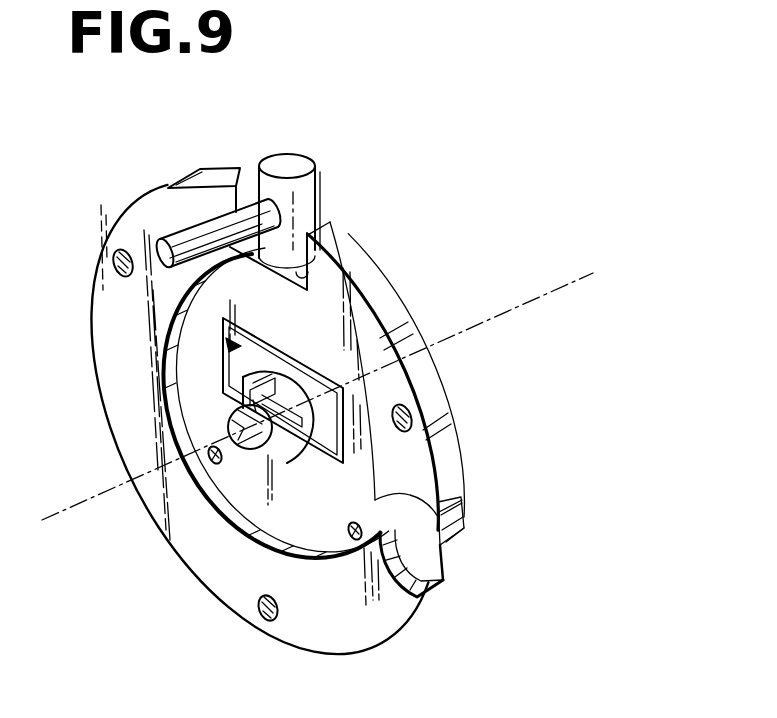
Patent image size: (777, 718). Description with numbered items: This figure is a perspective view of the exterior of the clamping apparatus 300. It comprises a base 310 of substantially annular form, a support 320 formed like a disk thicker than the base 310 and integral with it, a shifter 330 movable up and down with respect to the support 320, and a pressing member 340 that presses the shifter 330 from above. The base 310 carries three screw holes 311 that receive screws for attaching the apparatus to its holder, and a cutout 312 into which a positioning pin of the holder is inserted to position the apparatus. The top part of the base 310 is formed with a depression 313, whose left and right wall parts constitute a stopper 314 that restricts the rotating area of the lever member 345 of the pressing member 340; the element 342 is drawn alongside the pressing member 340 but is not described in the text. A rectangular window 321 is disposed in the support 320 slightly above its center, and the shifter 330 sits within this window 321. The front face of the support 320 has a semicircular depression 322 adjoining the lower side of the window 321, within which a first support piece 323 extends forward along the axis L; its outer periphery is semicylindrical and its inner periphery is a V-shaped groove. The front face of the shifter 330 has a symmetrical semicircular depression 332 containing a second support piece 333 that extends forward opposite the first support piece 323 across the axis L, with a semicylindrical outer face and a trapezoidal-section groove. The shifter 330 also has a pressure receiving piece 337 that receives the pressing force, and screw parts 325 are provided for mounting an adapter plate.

The clamping apparatus 300 is at (494, 237).
The base 310 is at (362, 620).
The screw holes 311 is at (116, 274).
The cutout 312 is at (440, 562).
The depression 313 is at (331, 203).
The stopper 314 is at (250, 176).
The support 320 is at (253, 506).
The rectangular window 321 is at (335, 447).
The semicircular depression 322 is at (238, 538).
The first support piece 323 is at (172, 532).
The screw parts 325 is at (210, 446).
The shifter 330 is at (228, 342).
The semicircular depression 332 is at (345, 330).
The second support piece 333 is at (245, 405).
The pressure receiving piece 337 is at (330, 327).
The pressing member 340 is at (269, 134).
The cylinder 342 is at (324, 150).
The lever member 345 is at (183, 237).
The axis L is at (48, 512).